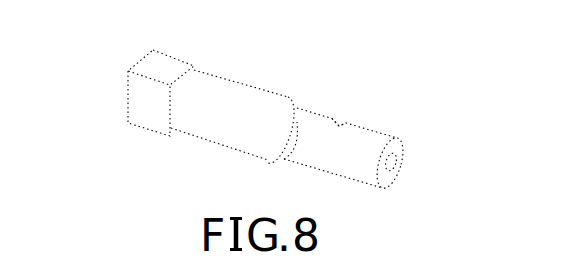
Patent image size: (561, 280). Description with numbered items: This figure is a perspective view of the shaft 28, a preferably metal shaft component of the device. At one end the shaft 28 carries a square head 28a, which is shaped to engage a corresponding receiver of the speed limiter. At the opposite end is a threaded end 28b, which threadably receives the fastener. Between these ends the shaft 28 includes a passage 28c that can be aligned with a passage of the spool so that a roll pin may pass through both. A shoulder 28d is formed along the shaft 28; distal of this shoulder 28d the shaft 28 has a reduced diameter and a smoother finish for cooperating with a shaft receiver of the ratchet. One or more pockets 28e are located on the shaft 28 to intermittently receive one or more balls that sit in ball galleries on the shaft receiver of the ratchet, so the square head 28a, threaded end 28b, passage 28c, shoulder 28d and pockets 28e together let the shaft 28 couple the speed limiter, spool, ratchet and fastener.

The shaft 28 is at (361, 84).
The square head 28a is at (127, 84).
The threaded end 28b is at (393, 166).
The passage 28c is at (275, 102).
The shoulder 28d is at (290, 149).
The pockets 28e is at (341, 129).